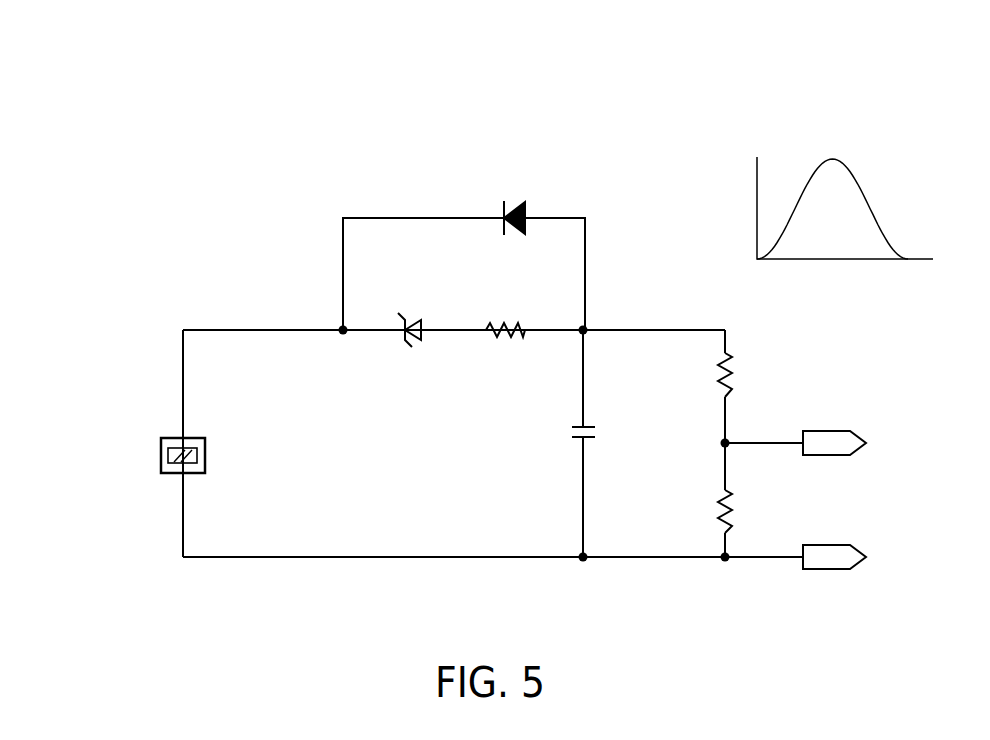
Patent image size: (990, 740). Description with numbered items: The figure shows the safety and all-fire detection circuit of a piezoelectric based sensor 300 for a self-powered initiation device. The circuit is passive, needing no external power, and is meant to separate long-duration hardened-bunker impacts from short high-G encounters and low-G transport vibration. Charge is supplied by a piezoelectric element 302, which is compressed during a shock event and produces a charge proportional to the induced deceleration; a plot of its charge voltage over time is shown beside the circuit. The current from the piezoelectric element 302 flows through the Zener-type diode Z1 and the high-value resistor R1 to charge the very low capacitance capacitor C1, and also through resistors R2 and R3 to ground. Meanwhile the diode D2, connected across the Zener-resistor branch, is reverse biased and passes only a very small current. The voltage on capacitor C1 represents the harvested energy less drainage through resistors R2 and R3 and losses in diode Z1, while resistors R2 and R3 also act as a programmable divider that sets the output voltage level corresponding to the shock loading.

The piezoelectric based sensor 300 is at (312, 84).
The piezoelectric element 302 is at (172, 430).
The diode D2 is at (504, 201).
The diode Z1 is at (402, 312).
The resistor R1 is at (505, 312).
The capacitor C1 is at (604, 435).
The resistor R2 is at (748, 375).
The resistor R3 is at (748, 511).